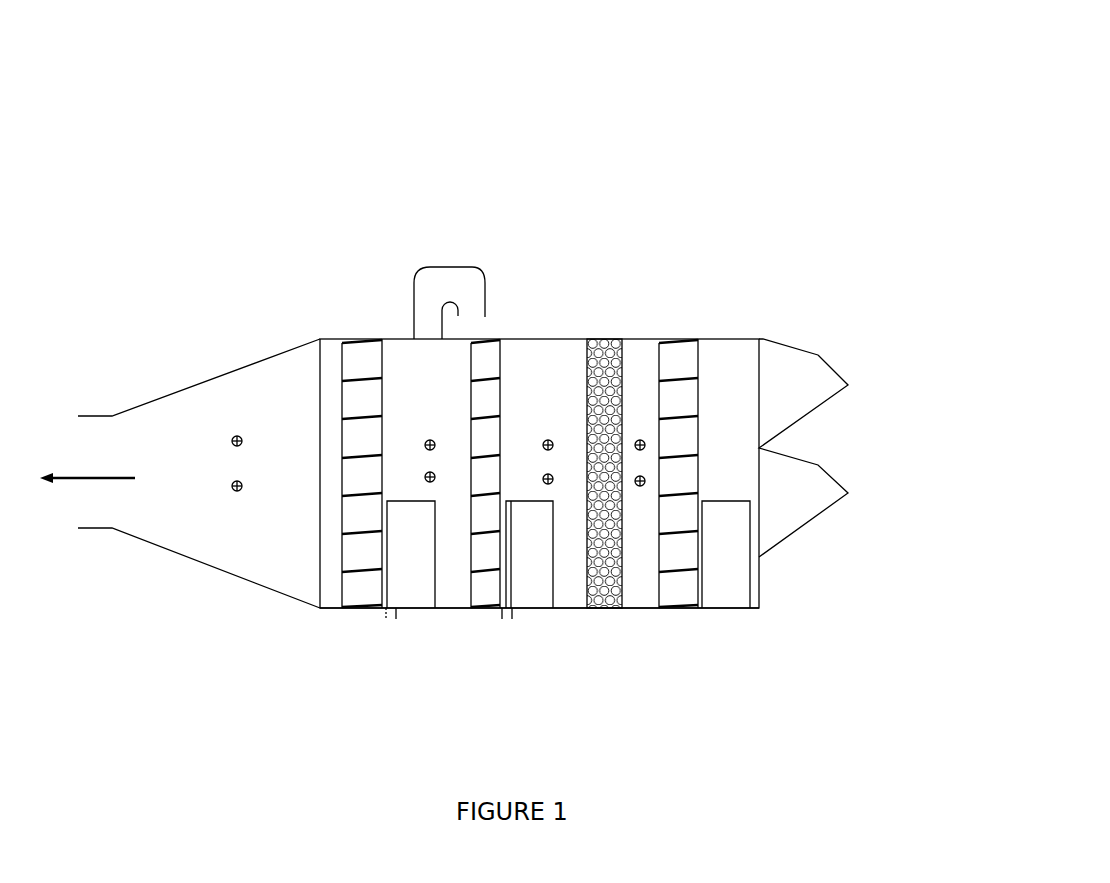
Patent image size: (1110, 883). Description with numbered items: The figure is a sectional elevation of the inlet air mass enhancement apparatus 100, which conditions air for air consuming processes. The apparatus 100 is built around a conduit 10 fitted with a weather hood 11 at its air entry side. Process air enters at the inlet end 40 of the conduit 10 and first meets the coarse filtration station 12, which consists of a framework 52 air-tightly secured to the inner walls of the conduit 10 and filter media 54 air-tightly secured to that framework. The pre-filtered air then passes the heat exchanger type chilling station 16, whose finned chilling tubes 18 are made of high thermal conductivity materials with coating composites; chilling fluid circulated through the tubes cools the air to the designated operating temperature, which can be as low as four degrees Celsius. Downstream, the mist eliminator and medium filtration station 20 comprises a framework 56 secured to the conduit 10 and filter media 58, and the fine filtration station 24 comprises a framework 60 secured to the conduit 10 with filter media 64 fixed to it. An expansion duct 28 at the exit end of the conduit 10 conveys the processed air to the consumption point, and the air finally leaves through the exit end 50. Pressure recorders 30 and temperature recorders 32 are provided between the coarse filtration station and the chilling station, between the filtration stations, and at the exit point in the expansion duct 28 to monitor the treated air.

The inlet air mass enhancement apparatus 100 is at (643, 146).
The conduit 10 is at (648, 338).
The weather hood 11 is at (792, 349).
The coarse filtration station 12 is at (683, 608).
The chilling station 16 is at (603, 608).
The finned chilling tubes 18 is at (600, 343).
The mist eliminator and medium filtration station 20 is at (485, 608).
The fine filtration station 24 is at (377, 608).
The expansion duct 28 is at (233, 575).
The pressure recorder 30 is at (233, 435).
The temperature recorder 32 is at (233, 492).
The inlet end 40 is at (796, 556).
The exit end 50 is at (90, 413).
The framework 52 is at (699, 392).
The filter media 54 is at (680, 355).
The framework 56 is at (500, 402).
The filter media 58 is at (480, 365).
The framework 60 is at (382, 400).
The filter media 64 is at (352, 360).